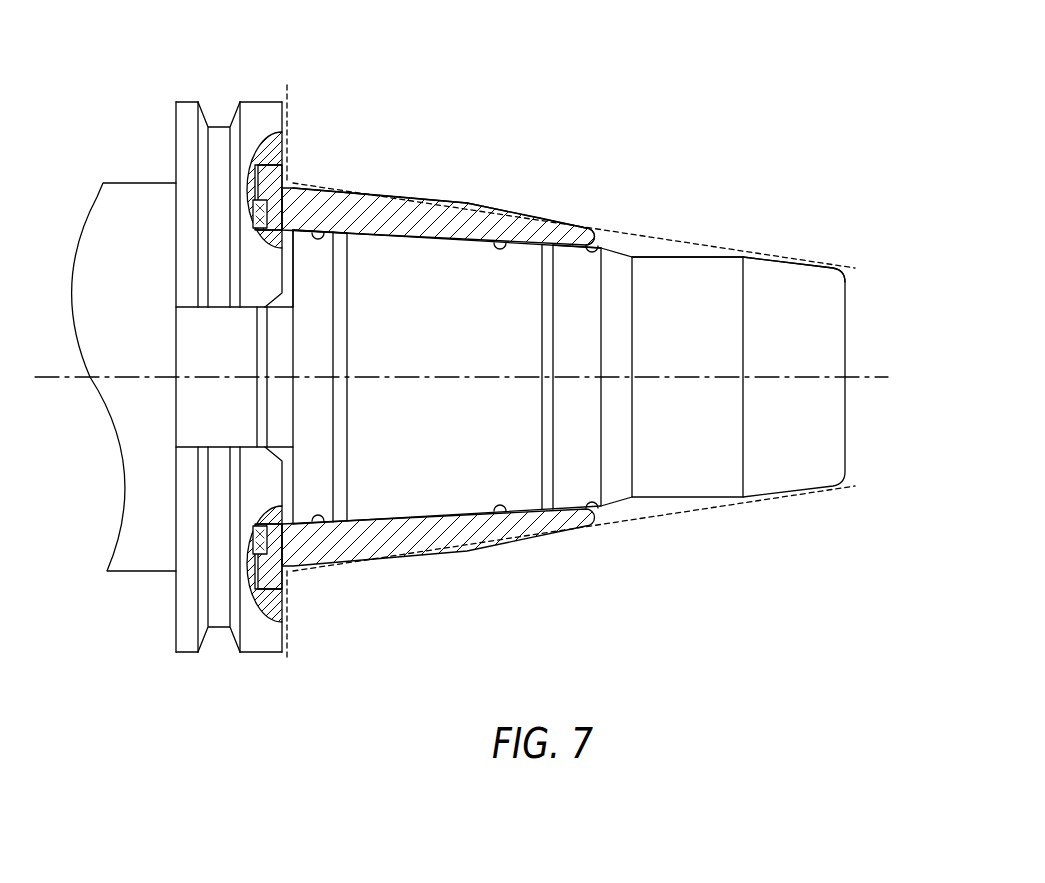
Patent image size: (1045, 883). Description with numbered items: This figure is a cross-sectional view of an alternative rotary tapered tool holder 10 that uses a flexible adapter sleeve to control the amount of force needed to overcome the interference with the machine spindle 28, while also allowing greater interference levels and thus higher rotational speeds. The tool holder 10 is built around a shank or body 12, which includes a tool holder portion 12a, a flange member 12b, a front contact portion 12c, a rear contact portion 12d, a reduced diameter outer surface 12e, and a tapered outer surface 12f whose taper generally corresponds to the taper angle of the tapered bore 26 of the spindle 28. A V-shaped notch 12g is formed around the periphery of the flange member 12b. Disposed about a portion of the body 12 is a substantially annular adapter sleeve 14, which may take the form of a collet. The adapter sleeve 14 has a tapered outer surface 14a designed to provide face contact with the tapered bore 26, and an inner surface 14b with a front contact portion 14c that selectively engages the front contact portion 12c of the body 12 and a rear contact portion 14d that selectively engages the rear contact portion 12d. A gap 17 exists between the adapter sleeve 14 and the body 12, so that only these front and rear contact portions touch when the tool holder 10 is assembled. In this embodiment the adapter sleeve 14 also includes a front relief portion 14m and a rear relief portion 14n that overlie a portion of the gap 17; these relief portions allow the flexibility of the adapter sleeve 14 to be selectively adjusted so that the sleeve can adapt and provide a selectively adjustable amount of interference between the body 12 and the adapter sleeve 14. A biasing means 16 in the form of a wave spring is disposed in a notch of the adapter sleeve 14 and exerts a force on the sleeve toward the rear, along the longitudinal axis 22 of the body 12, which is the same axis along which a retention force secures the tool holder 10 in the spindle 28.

The rotary tapered tool holder 10 is at (703, 72).
The body 12 is at (783, 245).
The tool holder portion 12a is at (122, 183).
The flange member 12b is at (260, 100).
The front contact portion 12c is at (291, 229).
The rear contact portion 12d is at (583, 231).
The reduced diameter outer surface 12e is at (688, 256).
The tapered outer surface 12f is at (815, 264).
The V-shaped notch 12g is at (220, 127).
The adapter sleeve 14 is at (428, 157).
The tapered outer surface 14a is at (476, 205).
The inner surface 14b is at (506, 245).
The front contact portion 14c is at (340, 193).
The rear contact portion 14d is at (600, 250).
The front relief portion 14m is at (320, 236).
The rear relief portion 14n is at (568, 224).
The biasing means 16 is at (252, 213).
The gap 17 is at (447, 243).
The longitudinal axis 22 is at (863, 373).
The tapered bore 26 is at (408, 543).
The spindle 28 is at (598, 567).